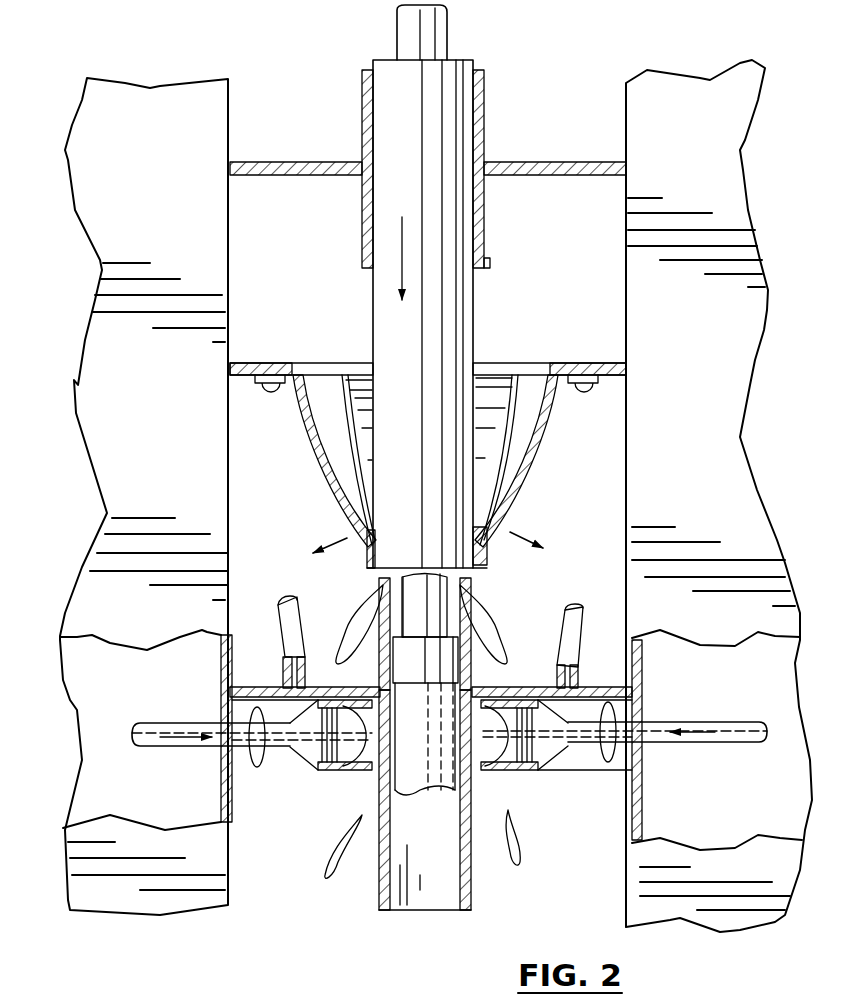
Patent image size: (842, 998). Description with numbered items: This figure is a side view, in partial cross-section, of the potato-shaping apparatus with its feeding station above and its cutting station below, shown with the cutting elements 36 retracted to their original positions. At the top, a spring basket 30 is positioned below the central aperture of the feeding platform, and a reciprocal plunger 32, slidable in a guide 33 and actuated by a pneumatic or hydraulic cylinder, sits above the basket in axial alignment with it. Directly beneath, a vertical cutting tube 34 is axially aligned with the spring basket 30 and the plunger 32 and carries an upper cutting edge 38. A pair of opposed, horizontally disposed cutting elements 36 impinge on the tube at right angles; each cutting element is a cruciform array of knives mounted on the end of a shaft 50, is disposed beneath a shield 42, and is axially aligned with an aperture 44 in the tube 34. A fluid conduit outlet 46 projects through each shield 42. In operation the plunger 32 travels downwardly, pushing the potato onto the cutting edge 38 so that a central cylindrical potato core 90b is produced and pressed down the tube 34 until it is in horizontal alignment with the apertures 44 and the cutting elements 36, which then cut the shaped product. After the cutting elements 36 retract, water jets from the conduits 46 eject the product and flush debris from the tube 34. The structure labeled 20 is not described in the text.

The wall 20 is at (720, 408).
The spring basket 30 is at (540, 480).
The reciprocal plunger 32 is at (474, 328).
The guide 33 is at (486, 238).
The vertical cutting tube 34 is at (380, 870).
The cutting elements 36 is at (533, 777).
The upper cutting edge 38 is at (383, 584).
The shield 42 is at (498, 686).
The aperture 44 is at (465, 760).
The fluid conduit outlet 46 is at (276, 617).
The shaft 50 is at (150, 747).
The central cylindrical potato core 90b is at (400, 778).